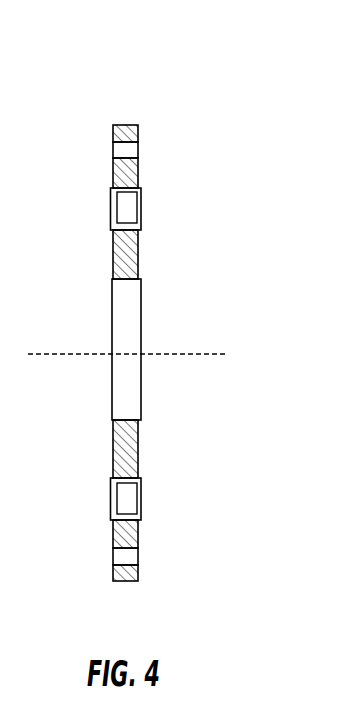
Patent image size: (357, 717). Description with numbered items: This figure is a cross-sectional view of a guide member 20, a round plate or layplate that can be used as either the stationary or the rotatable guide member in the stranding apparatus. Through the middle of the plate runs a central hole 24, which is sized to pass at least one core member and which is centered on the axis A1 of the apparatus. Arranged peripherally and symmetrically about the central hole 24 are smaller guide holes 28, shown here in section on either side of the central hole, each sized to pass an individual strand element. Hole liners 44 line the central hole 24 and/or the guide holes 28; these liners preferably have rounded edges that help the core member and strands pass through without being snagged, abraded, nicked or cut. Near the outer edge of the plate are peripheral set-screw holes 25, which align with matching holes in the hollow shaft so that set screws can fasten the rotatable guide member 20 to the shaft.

The guide member 20 is at (112, 102).
The central hole 24 is at (140, 292).
The peripheral set-screw holes 25 is at (128, 150).
The guide holes 28 is at (125, 208).
The hole liners 44 is at (138, 180).
The axis A1 is at (177, 356).